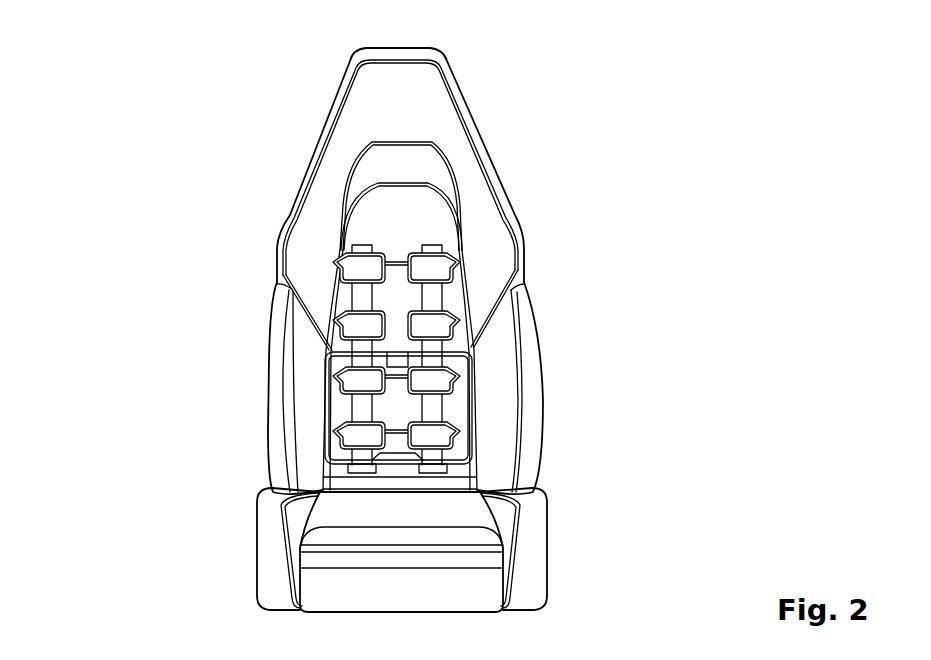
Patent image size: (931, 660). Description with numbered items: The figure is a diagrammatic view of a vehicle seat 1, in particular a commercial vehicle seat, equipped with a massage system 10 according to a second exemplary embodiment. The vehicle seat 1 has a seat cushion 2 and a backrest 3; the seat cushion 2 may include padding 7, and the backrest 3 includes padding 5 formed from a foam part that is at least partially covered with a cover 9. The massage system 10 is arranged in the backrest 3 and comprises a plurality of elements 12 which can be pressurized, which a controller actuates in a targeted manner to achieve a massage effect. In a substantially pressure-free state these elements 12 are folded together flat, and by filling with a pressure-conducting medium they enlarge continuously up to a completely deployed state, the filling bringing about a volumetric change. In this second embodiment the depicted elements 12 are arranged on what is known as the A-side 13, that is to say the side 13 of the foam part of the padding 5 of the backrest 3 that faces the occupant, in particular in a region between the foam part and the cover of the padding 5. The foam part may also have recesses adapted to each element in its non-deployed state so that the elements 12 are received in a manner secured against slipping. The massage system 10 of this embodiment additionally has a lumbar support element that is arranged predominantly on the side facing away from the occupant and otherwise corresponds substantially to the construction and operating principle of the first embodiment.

The vehicle seat 1 is at (155, 223).
The seat cushion 2 is at (343, 543).
The backrest 3 is at (297, 223).
The padding 5 is at (298, 401).
The padding 7 is at (530, 552).
The cover 9 is at (270, 441).
The massage system 10 is at (442, 328).
The elements which can be pressurized 12 is at (440, 264).
The A-side 13 is at (458, 411).